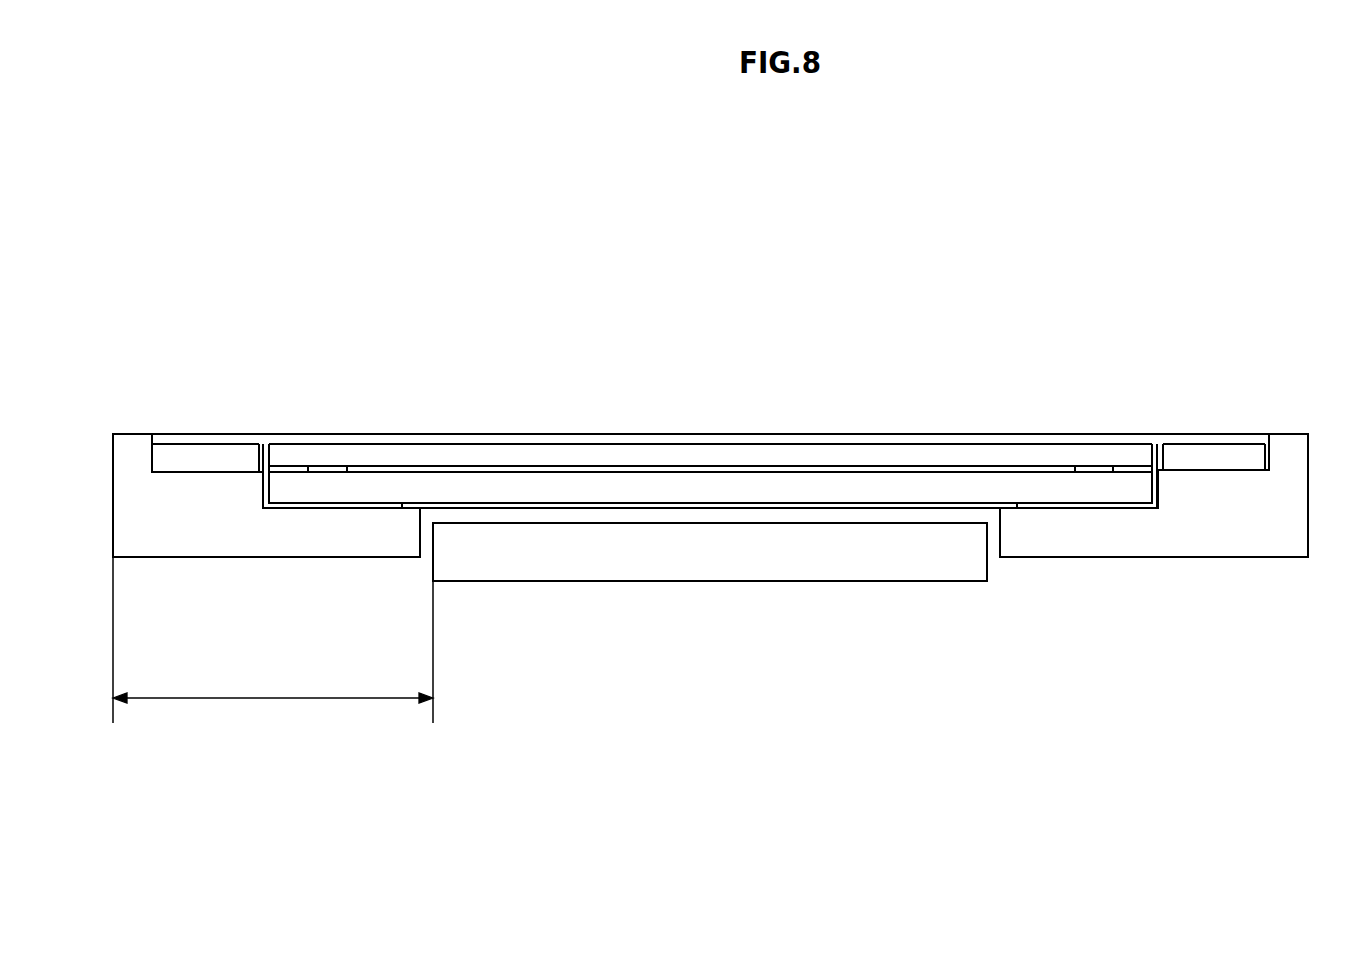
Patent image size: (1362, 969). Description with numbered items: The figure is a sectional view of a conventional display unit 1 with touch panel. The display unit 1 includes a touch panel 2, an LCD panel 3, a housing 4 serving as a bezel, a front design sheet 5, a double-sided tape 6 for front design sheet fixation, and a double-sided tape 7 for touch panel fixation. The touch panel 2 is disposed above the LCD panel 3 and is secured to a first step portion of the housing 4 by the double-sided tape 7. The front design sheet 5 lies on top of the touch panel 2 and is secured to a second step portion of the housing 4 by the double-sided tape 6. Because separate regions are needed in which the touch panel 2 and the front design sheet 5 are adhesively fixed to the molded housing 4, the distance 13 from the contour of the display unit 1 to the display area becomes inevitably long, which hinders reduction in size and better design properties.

The display unit with touch panel 1 is at (614, 341).
The touch panel 2 is at (1160, 504).
The LCD panel 3 is at (647, 568).
The housing 4 is at (237, 543).
The front design sheet 5 is at (812, 437).
The double-sided tape for front design sheet fixation 6 is at (225, 453).
The double-sided tape for touch panel fixation 7 is at (1059, 508).
The distance 13 is at (273, 651).